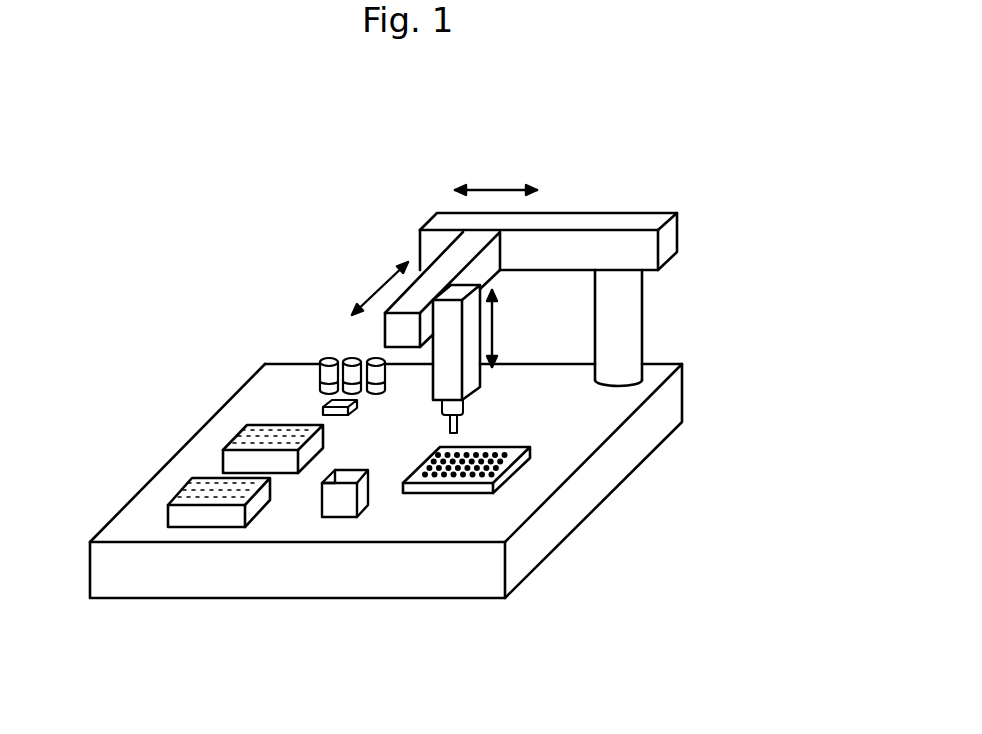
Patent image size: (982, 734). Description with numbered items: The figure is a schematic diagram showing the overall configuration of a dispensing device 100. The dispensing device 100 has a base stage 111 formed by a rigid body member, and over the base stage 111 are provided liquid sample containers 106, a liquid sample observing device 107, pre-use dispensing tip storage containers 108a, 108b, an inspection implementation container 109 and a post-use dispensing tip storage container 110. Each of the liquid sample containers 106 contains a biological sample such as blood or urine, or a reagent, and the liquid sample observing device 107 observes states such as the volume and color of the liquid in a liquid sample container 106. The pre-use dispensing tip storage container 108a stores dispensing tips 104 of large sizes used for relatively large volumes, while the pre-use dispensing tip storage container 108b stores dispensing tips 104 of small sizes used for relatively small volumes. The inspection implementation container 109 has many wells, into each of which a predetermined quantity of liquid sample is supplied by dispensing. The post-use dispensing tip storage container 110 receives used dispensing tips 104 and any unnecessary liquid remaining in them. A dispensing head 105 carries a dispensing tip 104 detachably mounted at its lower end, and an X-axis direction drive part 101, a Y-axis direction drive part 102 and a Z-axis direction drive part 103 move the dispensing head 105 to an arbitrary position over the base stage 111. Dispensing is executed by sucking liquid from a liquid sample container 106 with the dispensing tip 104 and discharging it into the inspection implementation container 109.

The dispensing device 100 is at (640, 185).
The X-axis direction drive part 101 is at (645, 250).
The Y-axis direction drive part 102 is at (455, 258).
The Z-axis direction drive part 103 is at (472, 332).
The dispensing tip 104 is at (457, 420).
The dispensing head 105 is at (458, 410).
The liquid sample containers 106 is at (373, 360).
The liquid sample observing device 107 is at (323, 412).
The pre-use dispensing tip storage container 108a is at (223, 447).
The pre-use dispensing tip storage container 108b is at (168, 500).
The inspection implementation container 109 is at (515, 478).
The post-use dispensing tip storage container 110 is at (368, 505).
The base stage 111 is at (647, 458).